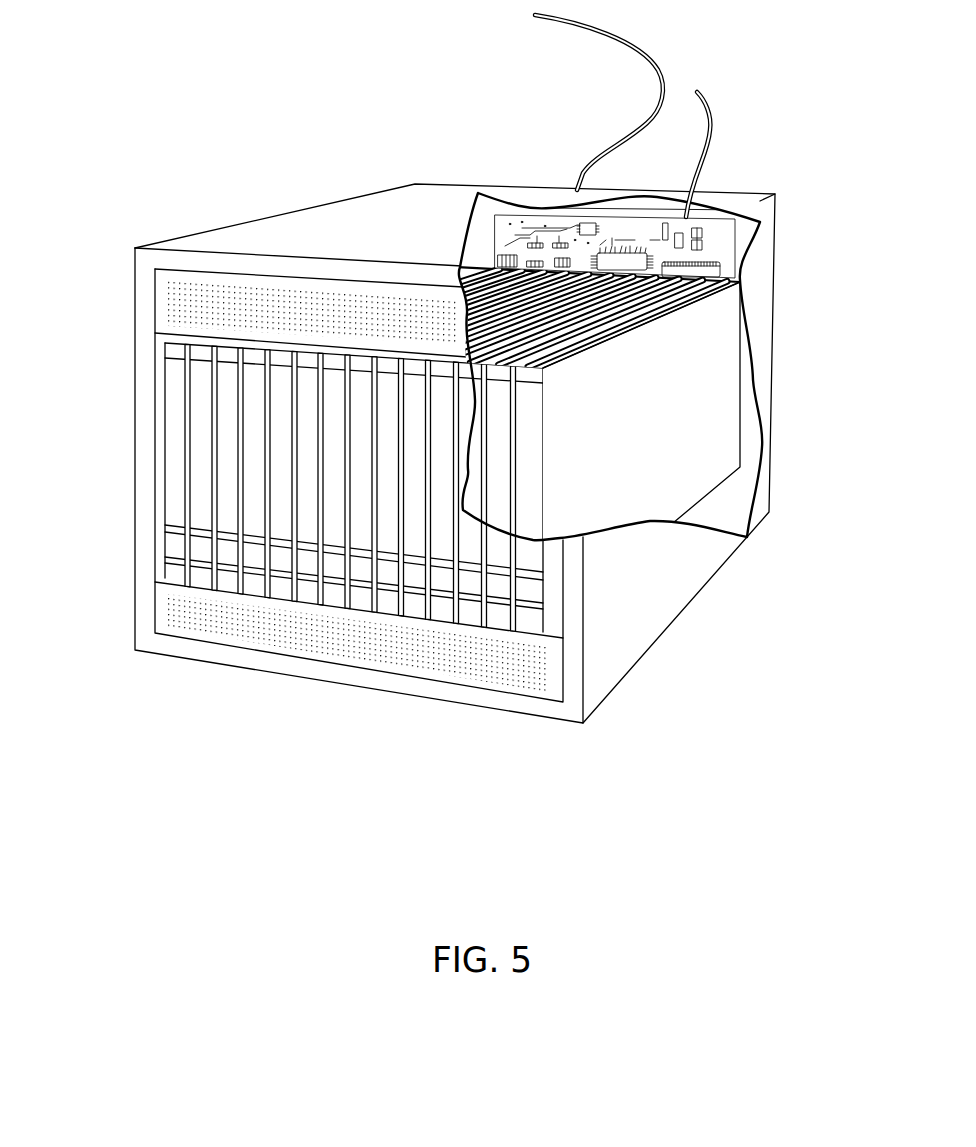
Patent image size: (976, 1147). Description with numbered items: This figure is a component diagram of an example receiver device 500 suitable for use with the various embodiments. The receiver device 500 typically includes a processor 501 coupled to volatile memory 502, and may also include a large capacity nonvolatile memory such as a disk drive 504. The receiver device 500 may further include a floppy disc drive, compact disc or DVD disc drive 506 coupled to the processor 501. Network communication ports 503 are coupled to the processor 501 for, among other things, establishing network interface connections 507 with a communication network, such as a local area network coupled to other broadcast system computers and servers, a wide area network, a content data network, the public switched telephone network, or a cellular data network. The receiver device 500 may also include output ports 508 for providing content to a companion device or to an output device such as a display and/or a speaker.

The receiver device 500 is at (313, 205).
The processor 501 is at (623, 265).
The volatile memory 502 is at (712, 272).
The network communication ports 503 is at (580, 218).
The disk drive 504 is at (228, 414).
The compact disc (CD) or DVD disc drive 506 is at (200, 452).
The network interface connections 507 is at (660, 80).
The output ports 508 is at (707, 103).